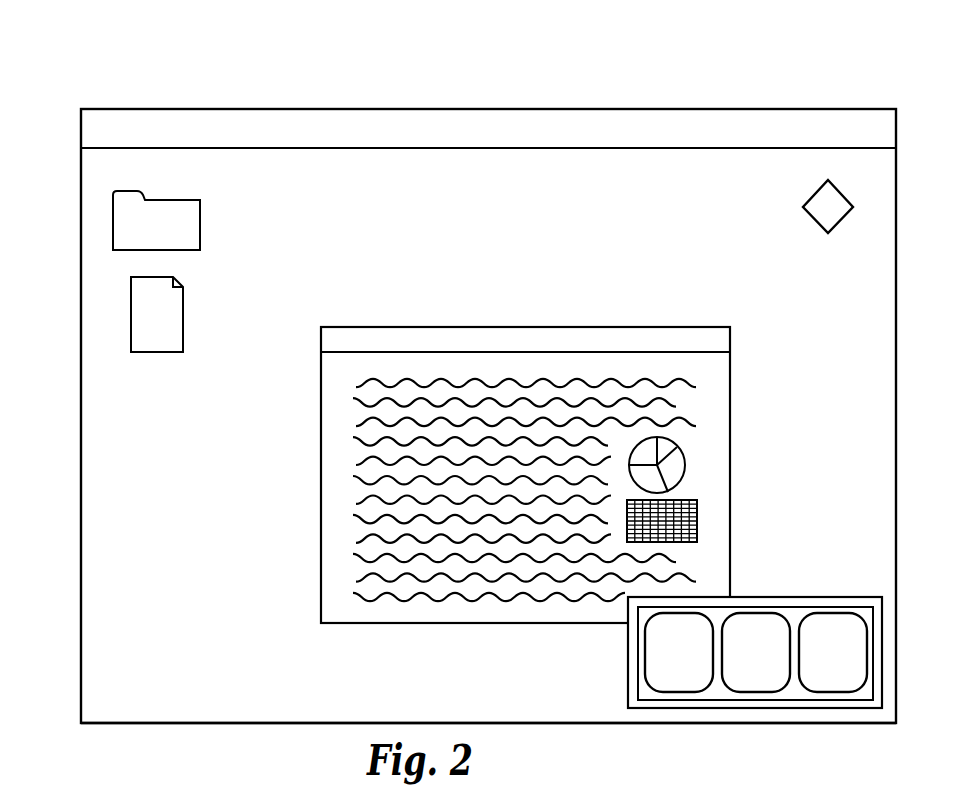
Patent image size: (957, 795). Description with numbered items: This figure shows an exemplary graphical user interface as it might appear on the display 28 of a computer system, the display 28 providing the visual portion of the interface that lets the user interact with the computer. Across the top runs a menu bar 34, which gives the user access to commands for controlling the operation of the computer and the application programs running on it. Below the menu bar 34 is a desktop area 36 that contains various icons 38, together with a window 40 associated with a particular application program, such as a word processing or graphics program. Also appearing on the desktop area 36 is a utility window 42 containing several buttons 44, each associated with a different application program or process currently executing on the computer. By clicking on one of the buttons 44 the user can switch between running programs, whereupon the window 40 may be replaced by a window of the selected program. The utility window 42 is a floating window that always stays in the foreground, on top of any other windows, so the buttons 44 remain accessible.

The display device 28 is at (355, 92).
The menu bar 34 is at (569, 120).
The desktop area 36 is at (225, 705).
The icons 38 is at (118, 222).
The window 40 is at (481, 325).
The utility window 42 is at (775, 597).
The buttons 44 is at (765, 680).